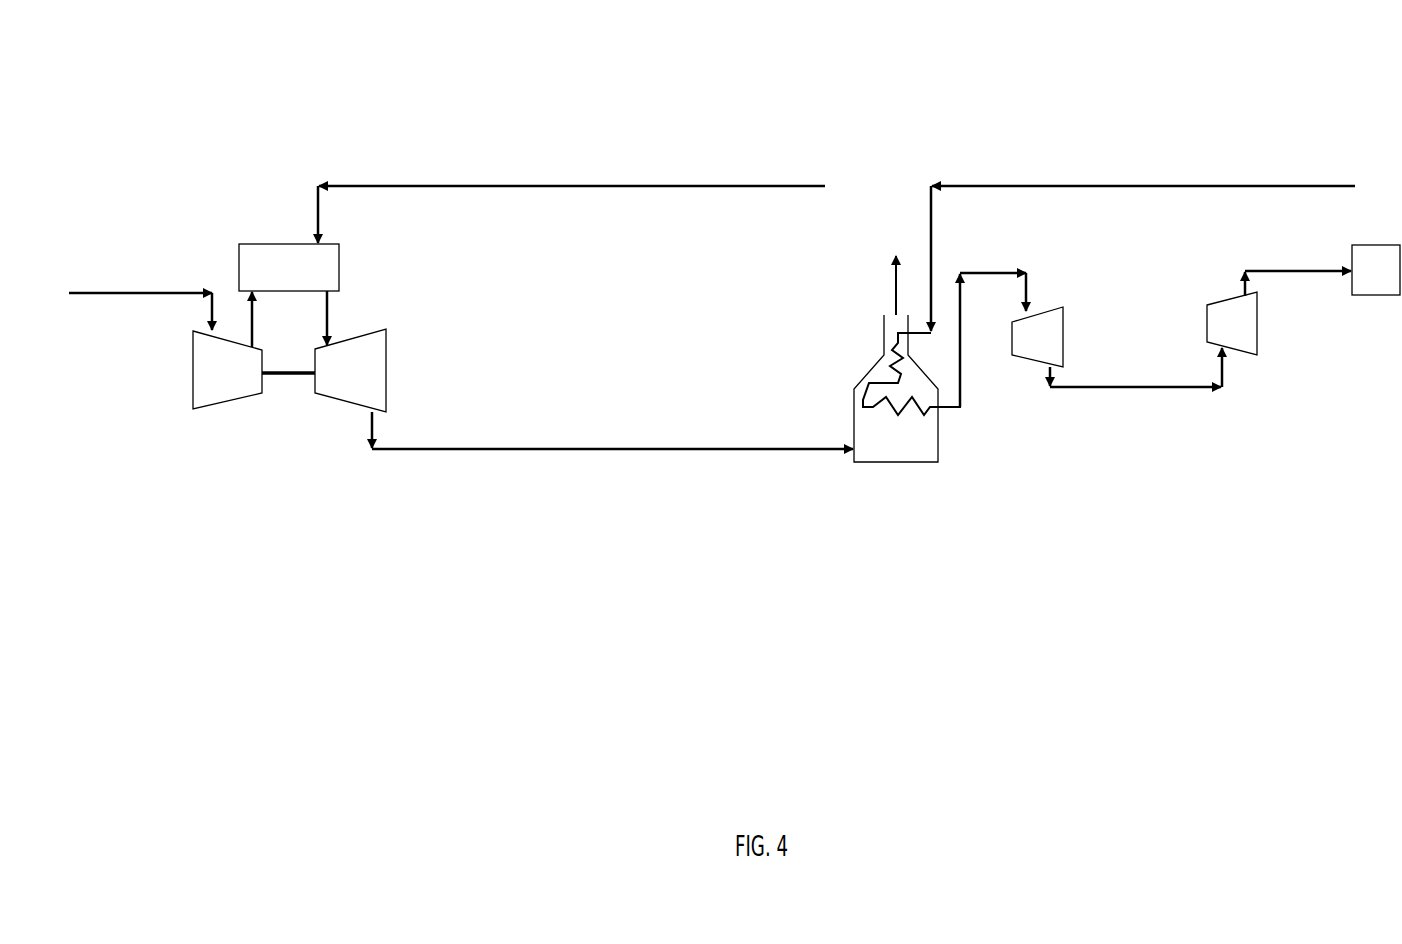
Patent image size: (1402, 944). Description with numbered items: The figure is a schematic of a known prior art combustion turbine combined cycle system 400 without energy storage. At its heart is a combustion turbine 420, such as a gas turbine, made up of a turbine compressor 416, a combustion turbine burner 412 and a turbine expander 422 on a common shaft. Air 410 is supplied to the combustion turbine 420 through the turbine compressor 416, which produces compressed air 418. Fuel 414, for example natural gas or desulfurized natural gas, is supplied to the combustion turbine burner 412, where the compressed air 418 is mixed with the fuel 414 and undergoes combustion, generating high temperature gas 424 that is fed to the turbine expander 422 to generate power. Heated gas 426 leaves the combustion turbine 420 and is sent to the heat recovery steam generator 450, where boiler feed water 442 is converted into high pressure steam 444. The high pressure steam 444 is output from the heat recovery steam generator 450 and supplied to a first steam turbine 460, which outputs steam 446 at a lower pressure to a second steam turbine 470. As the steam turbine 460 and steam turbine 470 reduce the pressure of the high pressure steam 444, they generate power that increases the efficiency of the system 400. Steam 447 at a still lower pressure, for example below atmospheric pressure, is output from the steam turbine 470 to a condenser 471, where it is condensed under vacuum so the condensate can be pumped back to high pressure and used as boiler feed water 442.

The system 400 is at (222, 77).
The air 410 is at (115, 290).
The combustion turbine burner 412 is at (268, 242).
The fuel 414 is at (450, 184).
The turbine compressor 416 is at (207, 410).
The compressed air 418 is at (256, 325).
The combustion turbine 420 is at (323, 407).
The turbine expander 422 is at (388, 352).
The high temperature gas 424 is at (330, 308).
The heated gas 426 is at (460, 448).
The boiler feed water 442 is at (1064, 185).
The high pressure steam 444 is at (999, 271).
The steam 446 is at (1116, 386).
The steam 447 is at (1318, 275).
The heat recovery steam generator 450 is at (865, 372).
The steam turbine 460 is at (1066, 322).
The steam turbine 470 is at (1214, 301).
The condenser 471 is at (1360, 244).